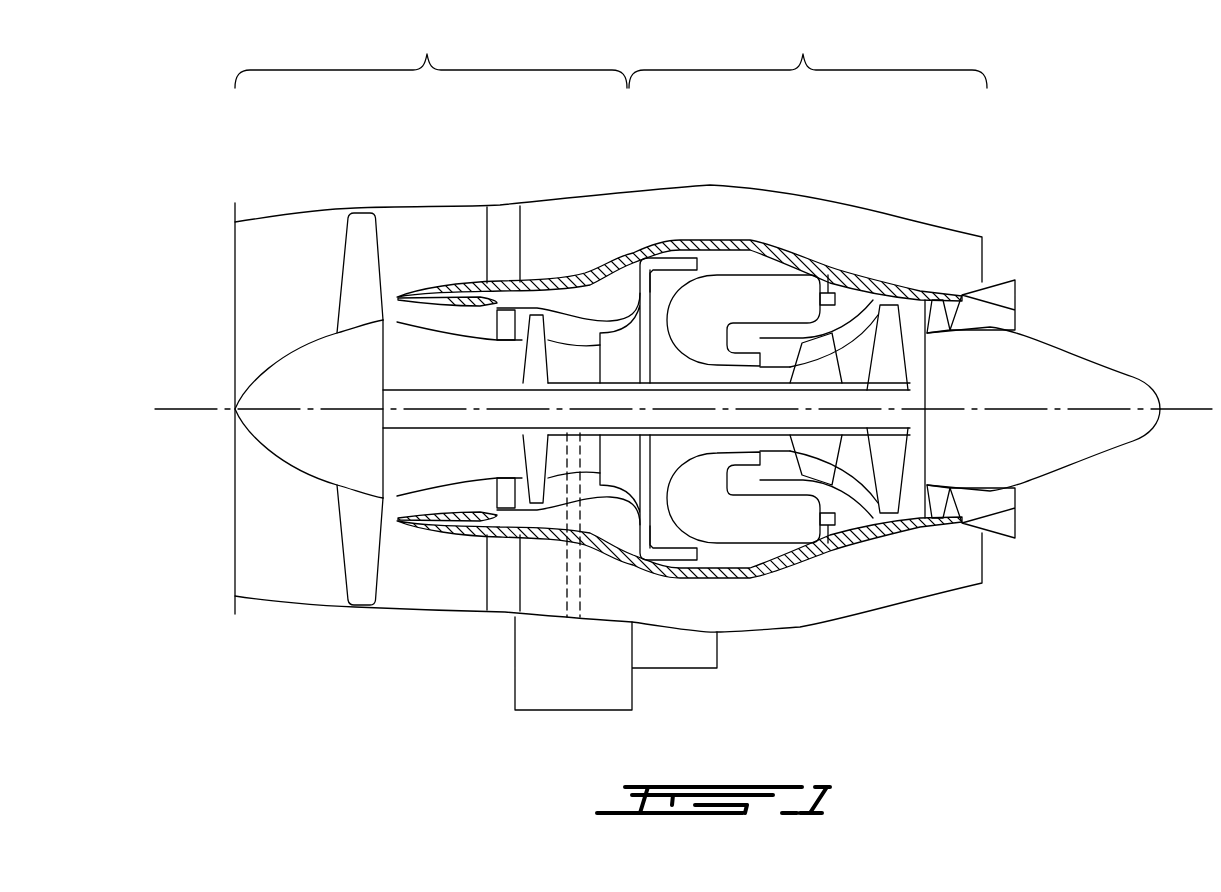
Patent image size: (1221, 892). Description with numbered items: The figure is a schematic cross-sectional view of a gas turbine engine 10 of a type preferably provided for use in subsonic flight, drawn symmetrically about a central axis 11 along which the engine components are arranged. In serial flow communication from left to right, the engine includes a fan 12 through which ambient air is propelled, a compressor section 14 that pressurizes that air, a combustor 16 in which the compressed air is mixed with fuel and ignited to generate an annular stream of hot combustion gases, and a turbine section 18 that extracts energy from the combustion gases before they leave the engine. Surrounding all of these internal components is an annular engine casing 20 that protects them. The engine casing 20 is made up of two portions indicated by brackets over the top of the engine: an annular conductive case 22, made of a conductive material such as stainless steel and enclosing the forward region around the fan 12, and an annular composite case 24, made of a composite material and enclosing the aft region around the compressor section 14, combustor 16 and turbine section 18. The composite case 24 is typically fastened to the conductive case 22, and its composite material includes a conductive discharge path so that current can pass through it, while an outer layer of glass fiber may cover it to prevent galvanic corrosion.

The gas turbine engine 10 is at (955, 152).
The central longitudinal axis 11 is at (1190, 409).
The fan 12 is at (355, 534).
The compressor section 14 is at (567, 323).
The combustor 16 is at (745, 292).
The turbine section 18 is at (853, 465).
The engine casing 20 is at (302, 207).
The conductive case 22 is at (431, 53).
The composite case 24 is at (808, 53).